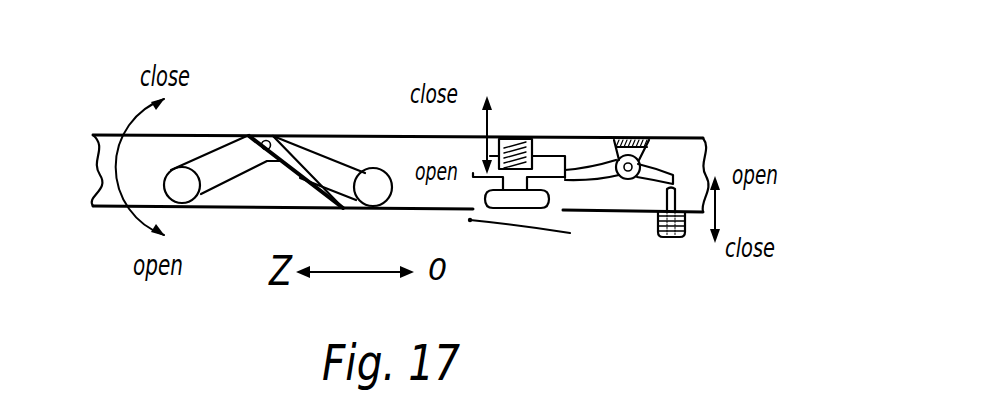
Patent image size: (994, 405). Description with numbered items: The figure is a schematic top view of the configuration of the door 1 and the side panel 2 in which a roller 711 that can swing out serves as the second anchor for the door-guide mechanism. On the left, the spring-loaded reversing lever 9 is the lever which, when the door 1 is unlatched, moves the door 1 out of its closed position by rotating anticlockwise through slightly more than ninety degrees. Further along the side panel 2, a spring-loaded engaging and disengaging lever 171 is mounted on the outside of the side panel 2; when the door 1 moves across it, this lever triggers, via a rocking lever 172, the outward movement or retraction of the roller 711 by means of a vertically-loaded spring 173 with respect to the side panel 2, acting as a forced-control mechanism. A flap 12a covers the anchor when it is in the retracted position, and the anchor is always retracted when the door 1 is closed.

The door 1 is at (115, 163).
The side panel 2 is at (694, 137).
The spring-loaded reversing lever 9 is at (217, 168).
The flap 12a is at (500, 222).
The spring-loaded engaging and disengaging lever 171 is at (670, 239).
The rocking lever 172 is at (603, 180).
The vertically-loaded spring 173 is at (534, 141).
The roller 711 is at (513, 207).